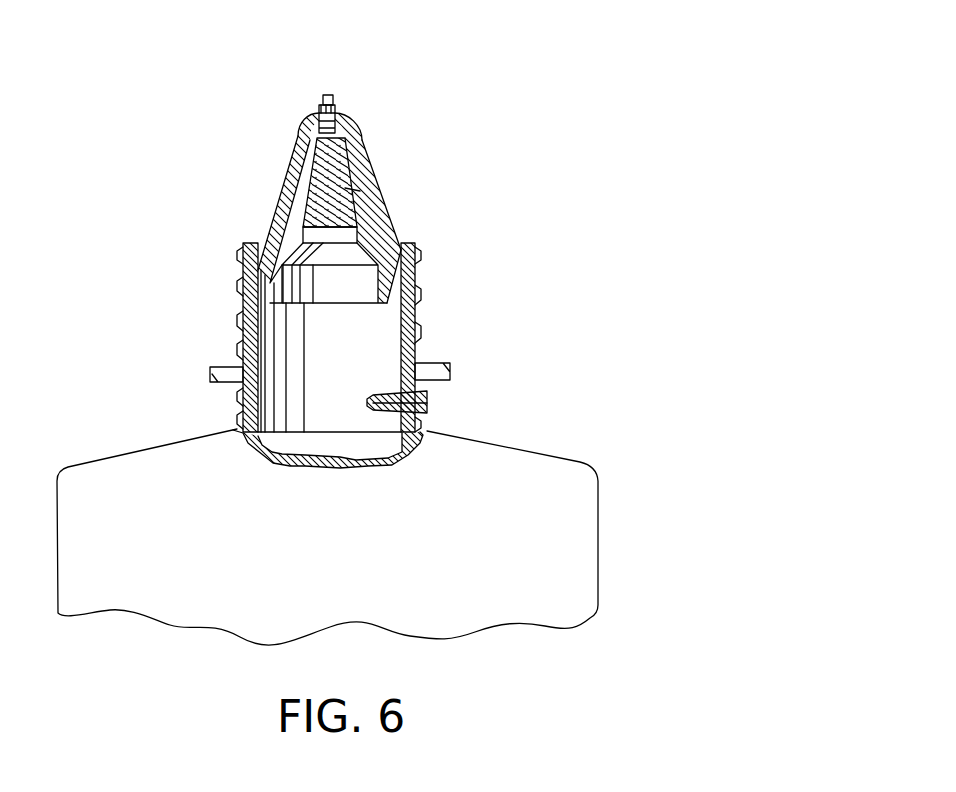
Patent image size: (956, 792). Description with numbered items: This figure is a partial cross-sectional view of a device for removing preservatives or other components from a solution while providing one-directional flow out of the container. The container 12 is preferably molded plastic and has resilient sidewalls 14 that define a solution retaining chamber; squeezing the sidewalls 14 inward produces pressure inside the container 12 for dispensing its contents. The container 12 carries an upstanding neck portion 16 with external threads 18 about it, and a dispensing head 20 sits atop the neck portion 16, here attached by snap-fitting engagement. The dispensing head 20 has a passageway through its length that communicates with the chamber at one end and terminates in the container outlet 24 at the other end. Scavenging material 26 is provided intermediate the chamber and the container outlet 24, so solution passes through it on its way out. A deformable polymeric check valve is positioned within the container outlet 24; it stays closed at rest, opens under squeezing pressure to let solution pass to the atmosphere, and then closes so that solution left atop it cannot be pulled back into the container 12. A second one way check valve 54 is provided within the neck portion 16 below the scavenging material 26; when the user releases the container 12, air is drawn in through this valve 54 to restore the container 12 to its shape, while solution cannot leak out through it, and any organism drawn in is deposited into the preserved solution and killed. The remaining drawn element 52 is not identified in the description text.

The container 12 is at (539, 435).
The resilient sidewalls 14 is at (605, 510).
The neck portion 16 is at (242, 260).
The external threads 18 is at (417, 303).
The dispensing head 20 is at (362, 150).
The container outlet 24 is at (329, 94).
The scavenging material 26 is at (375, 183).
The needle seal 52 is at (336, 105).
The second one way check valve 54 is at (426, 393).